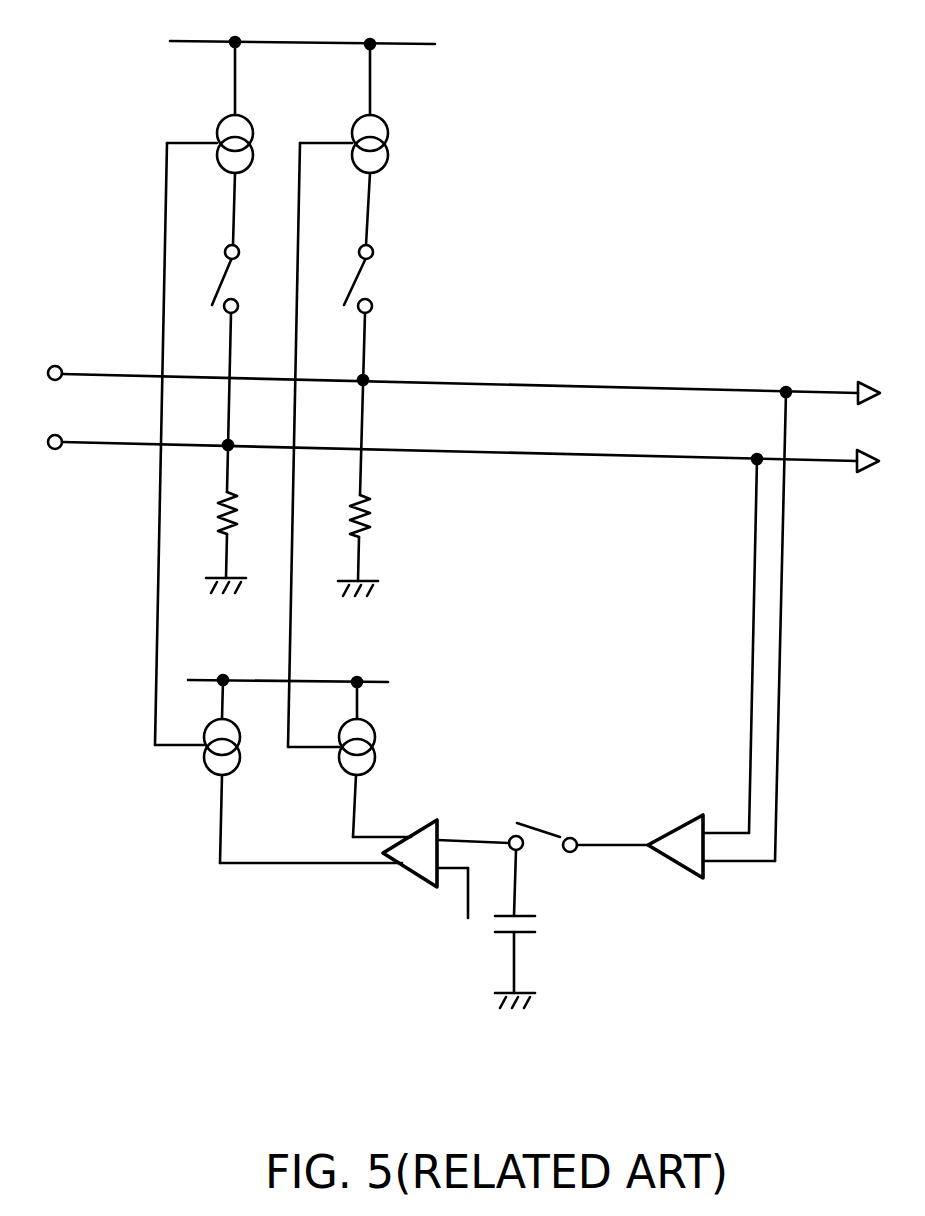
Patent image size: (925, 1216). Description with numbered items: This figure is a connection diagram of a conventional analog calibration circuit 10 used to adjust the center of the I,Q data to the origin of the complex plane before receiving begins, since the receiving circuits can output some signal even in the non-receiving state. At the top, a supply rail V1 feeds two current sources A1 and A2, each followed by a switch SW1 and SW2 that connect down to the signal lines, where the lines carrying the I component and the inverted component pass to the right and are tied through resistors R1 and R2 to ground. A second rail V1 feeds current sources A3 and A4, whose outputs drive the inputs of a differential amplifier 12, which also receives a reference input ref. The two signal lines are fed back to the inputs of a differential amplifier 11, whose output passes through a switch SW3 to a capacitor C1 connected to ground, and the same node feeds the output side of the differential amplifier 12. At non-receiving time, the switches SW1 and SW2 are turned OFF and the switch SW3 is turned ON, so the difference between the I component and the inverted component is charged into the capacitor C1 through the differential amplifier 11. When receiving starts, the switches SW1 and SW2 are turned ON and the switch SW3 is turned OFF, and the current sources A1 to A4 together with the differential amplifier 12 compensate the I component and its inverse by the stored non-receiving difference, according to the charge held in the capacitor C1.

The calibration circuit 10 is at (782, 80).
The differential amplifier 11 is at (686, 870).
The differential amplifier 12 is at (410, 874).
The current source A1 is at (219, 126).
The current source A2 is at (386, 136).
The current source A3 is at (206, 772).
The current source A4 is at (373, 758).
The switch SW1 is at (236, 279).
The switch SW2 is at (364, 279).
The switch SW3 is at (540, 833).
The resistor R1 is at (234, 500).
The resistor R2 is at (367, 503).
The capacitor C1 is at (522, 935).
The supply voltage V1 is at (182, 41).
The I component I is at (450, 379).
The reference voltage input ref is at (465, 945).